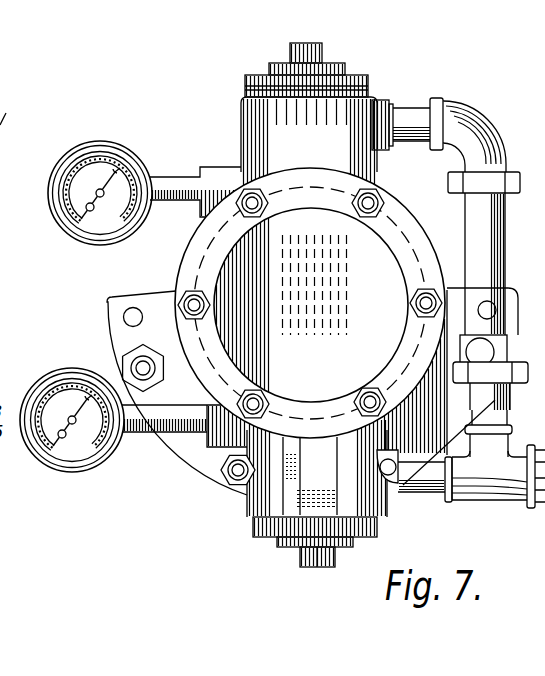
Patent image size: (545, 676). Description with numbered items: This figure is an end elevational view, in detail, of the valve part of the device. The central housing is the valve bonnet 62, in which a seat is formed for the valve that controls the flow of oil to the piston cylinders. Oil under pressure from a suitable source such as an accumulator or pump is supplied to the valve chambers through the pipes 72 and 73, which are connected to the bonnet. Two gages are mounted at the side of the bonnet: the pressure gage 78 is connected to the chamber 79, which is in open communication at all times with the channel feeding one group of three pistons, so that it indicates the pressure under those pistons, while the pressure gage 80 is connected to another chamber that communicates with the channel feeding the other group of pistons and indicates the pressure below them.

The valve bonnet 62 is at (250, 517).
The pipe 72 is at (433, 488).
The pipe 73 is at (410, 113).
The pressure gage 78 is at (85, 452).
The chamber 79 is at (123, 393).
The pressure gage 80 is at (108, 155).